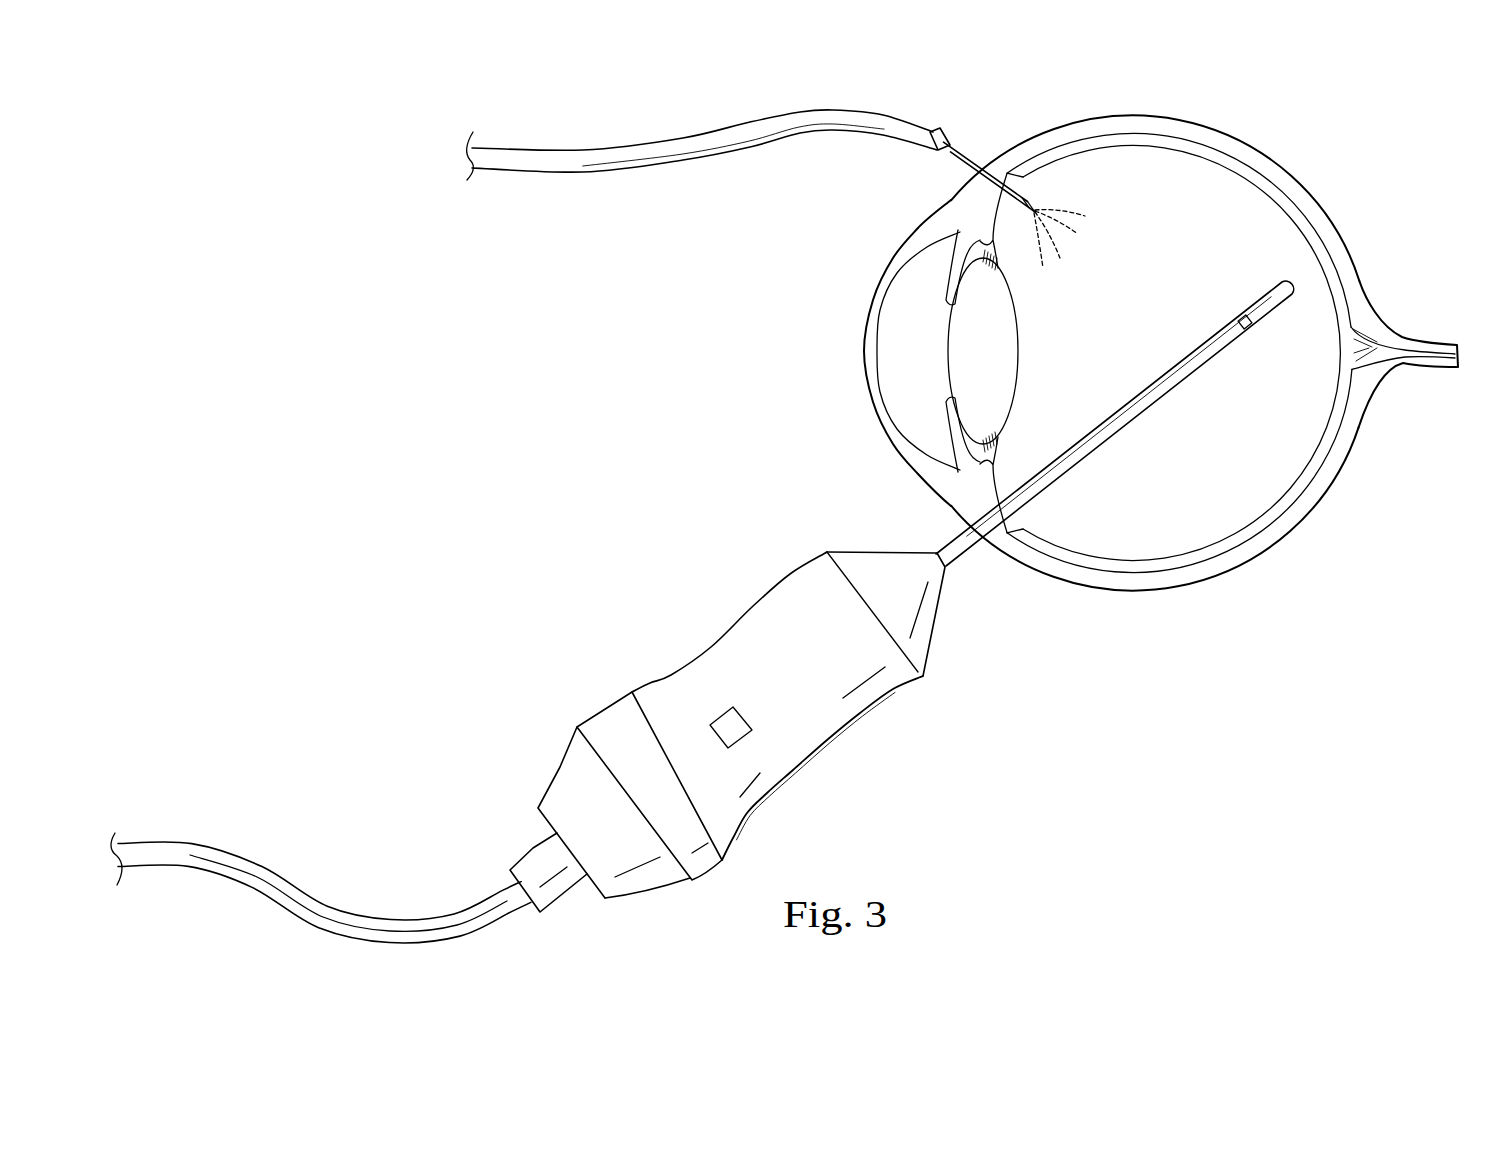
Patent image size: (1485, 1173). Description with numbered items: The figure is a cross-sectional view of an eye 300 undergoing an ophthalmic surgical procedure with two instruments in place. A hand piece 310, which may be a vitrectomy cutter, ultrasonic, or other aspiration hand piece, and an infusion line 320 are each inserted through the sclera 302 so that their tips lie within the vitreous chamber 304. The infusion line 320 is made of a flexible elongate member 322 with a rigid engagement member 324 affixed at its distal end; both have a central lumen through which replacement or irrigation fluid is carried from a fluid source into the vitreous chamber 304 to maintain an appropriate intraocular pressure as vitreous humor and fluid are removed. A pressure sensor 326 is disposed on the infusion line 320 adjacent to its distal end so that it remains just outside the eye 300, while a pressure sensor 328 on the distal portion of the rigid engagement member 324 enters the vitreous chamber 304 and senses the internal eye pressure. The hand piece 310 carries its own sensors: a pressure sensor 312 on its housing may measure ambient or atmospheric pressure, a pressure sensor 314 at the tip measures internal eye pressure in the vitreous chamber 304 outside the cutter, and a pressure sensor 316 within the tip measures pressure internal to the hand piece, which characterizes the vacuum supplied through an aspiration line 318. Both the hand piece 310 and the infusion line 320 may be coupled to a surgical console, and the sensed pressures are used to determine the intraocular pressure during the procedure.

The eye 300 is at (1281, 162).
The sclera 302 is at (1143, 587).
The vitreous chamber 304 is at (1175, 173).
The hand piece 310 is at (832, 795).
The pressure sensor 312 is at (530, 850).
The pressure sensor 314 is at (1263, 292).
The pressure sensor 316 is at (1248, 328).
The aspiration line 318 is at (320, 932).
The infusion line 320 is at (660, 132).
The flexible elongate member 322 is at (640, 173).
The rigid engagement member 324 is at (960, 164).
The pressure sensor 326 is at (940, 138).
The pressure sensor 328 is at (1036, 197).